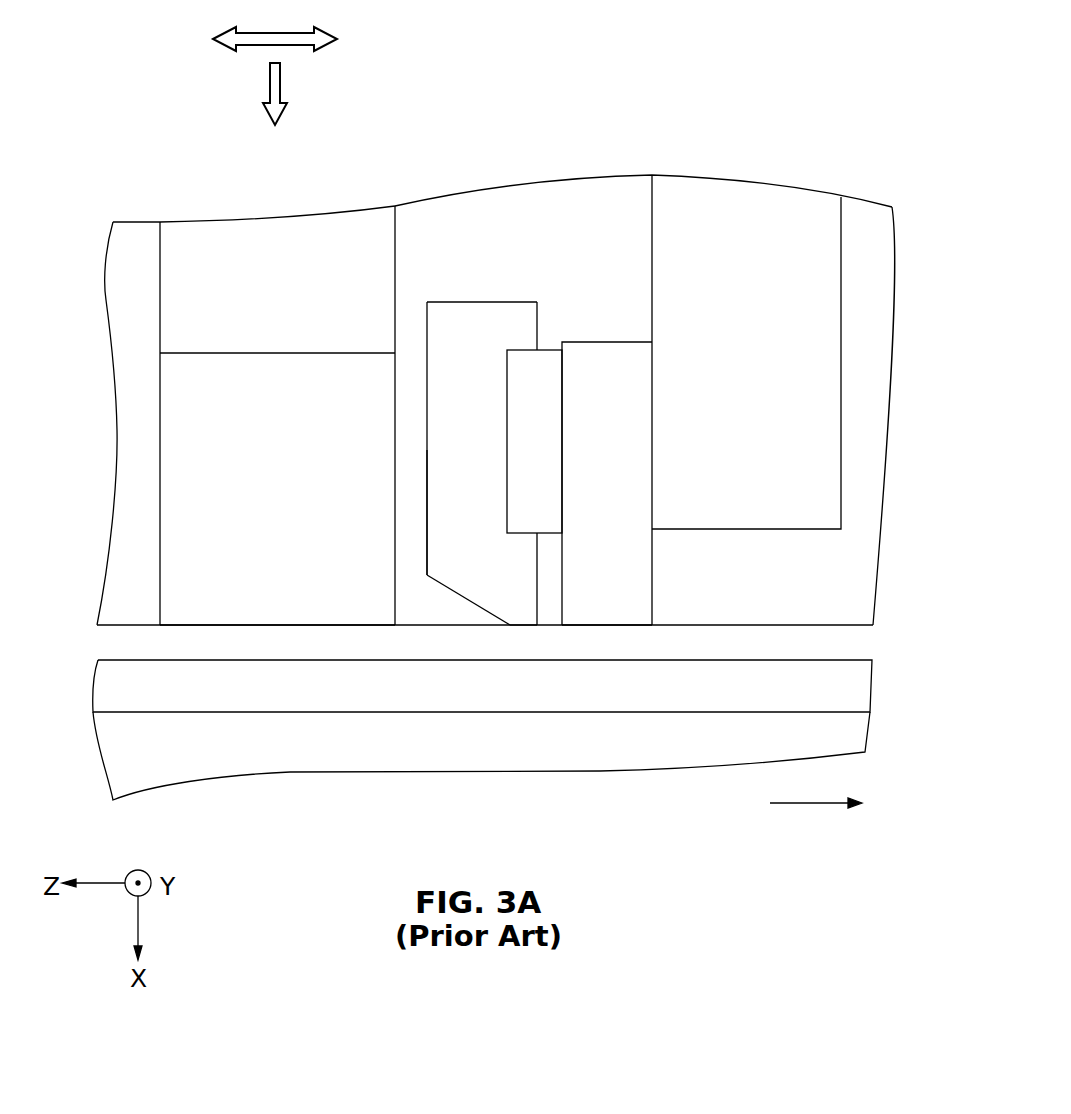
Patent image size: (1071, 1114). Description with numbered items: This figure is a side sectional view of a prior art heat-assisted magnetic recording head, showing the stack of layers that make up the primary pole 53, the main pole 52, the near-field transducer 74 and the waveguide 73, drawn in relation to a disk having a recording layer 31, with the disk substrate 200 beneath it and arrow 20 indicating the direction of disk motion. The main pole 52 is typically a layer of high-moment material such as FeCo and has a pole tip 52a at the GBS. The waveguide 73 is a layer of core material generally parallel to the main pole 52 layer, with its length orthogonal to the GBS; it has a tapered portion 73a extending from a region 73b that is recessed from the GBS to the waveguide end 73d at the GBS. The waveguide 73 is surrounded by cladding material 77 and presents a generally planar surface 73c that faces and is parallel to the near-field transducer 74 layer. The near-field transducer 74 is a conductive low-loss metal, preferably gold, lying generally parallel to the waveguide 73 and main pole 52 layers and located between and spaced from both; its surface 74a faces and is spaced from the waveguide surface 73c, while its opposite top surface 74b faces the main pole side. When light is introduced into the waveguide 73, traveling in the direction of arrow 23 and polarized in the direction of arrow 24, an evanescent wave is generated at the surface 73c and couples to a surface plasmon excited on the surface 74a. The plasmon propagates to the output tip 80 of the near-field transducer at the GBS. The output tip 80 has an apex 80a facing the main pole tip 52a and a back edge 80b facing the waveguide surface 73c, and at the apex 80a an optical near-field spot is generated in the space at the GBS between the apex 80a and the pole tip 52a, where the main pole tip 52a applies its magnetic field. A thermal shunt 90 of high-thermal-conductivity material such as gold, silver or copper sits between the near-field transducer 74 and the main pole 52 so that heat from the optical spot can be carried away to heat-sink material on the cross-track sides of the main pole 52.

The direction of slider travel / along track direction 20 is at (800, 805).
The arrow 23 is at (268, 98).
The arrow 24 is at (307, 32).
The recording layer 31 is at (855, 692).
The main pole 52 is at (637, 588).
The pole tip 52a is at (637, 628).
The primary pole 53 is at (822, 260).
The waveguide 73 is at (198, 232).
The tapered portion 73a is at (175, 568).
The region 73b is at (247, 353).
The planar surface 73c is at (400, 477).
The waveguide end 73d is at (195, 628).
The near-field transducer 74 is at (513, 335).
The surface 74a is at (425, 357).
The top surface of 74 74b is at (437, 302).
The cladding material 77 is at (130, 325).
The output tip 80 is at (453, 597).
The apex 80a is at (537, 625).
The back edge 80b is at (427, 573).
The thermal shunt 90 is at (545, 437).
The substrate / magnetic medium 200 is at (855, 730).
The gas bearing surface GBS is at (858, 628).